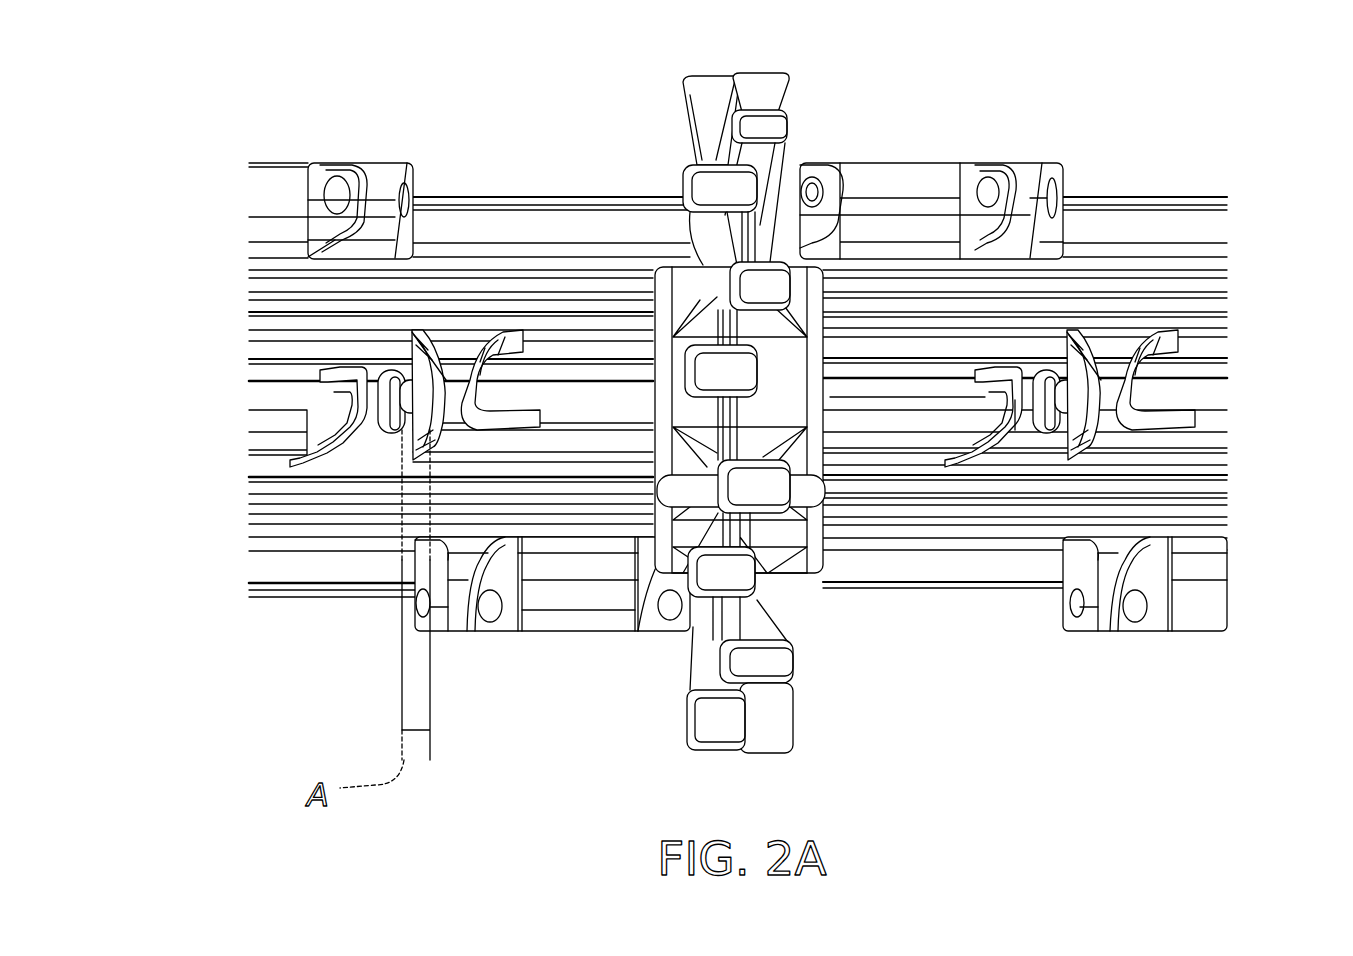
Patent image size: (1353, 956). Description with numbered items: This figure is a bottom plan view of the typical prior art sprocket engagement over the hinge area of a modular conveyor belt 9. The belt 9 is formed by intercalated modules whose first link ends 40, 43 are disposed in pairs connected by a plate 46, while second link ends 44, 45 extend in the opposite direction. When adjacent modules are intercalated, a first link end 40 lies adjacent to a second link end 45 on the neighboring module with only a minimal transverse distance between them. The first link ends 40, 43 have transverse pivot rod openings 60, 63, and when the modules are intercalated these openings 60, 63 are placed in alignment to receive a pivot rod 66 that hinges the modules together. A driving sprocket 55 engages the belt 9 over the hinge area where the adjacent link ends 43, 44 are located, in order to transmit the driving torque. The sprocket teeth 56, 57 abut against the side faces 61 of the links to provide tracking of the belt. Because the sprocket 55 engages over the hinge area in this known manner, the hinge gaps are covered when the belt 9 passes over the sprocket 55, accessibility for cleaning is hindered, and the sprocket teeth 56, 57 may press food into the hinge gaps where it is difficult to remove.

The belt 9 is at (220, 279).
The first link end 40 is at (805, 165).
The first link end 43 is at (380, 178).
The second link end 44 is at (462, 375).
The second link end 45 is at (645, 625).
The plate 46 is at (900, 182).
The driving sprocket 55 is at (797, 386).
The sprocket tooth 56 is at (713, 710).
The sprocket tooth 57 is at (770, 668).
The transverse pivot rod opening 60 is at (818, 192).
The side face 61 is at (1100, 398).
The transverse pivot rod opening 63 is at (336, 193).
The pivot rod 66 is at (913, 400).